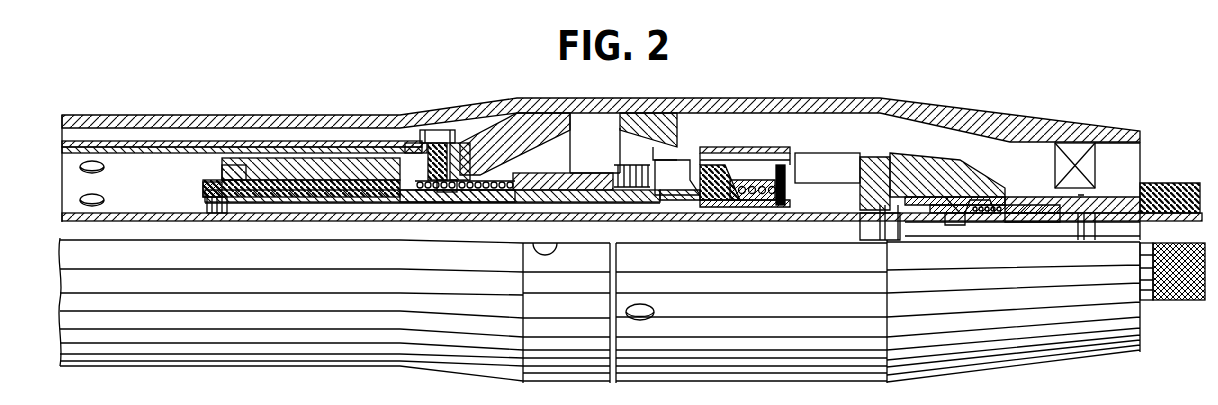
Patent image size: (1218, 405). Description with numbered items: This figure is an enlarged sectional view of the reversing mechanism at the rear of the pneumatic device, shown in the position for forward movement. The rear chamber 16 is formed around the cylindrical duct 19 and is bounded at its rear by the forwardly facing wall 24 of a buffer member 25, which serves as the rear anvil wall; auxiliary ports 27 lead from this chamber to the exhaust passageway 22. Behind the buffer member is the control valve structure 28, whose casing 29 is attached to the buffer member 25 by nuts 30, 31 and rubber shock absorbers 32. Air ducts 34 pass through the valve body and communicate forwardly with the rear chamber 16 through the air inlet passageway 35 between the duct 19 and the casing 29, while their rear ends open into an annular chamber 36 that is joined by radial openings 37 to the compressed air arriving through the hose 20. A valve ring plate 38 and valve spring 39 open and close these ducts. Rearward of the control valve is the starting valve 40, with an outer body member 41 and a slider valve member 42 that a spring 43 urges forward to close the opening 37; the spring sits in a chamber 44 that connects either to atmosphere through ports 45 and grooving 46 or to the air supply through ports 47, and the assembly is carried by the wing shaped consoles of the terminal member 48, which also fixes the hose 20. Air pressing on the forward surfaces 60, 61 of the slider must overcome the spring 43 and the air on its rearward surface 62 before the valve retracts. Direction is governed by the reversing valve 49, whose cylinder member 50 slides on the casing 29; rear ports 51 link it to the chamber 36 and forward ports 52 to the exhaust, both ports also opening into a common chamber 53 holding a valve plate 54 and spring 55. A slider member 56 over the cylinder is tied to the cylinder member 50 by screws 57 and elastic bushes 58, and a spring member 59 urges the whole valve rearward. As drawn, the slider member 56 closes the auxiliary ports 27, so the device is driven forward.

The rear chamber 16 is at (80, 188).
The cylindrical duct 19 is at (130, 223).
The hose 20 is at (1180, 196).
The exhaust passageway 22 is at (137, 135).
The forwardly facing wall 24 is at (224, 168).
The buffer member 25 is at (258, 158).
The auxiliary ports 27 is at (100, 170).
The control valve structure 28 is at (683, 192).
The casing 29 is at (485, 202).
The nut 30 is at (403, 200).
The nut 31 is at (207, 195).
The rubber shock absorbers 32 is at (337, 193).
The air ducts 34 is at (718, 204).
The air inlet passageway 35 is at (257, 213).
The annular chamber 36 is at (836, 177).
The radial openings 37 is at (852, 180).
The valve ring plate 38 is at (787, 206).
The valve spring 39 is at (738, 205).
The starting valve 40 is at (962, 220).
The outer body member 41 is at (913, 177).
The slider valve member 42 is at (897, 214).
The spring 43 is at (1013, 220).
The chamber 44 is at (997, 195).
The ports 45 is at (940, 183).
The grooving 46 is at (947, 197).
The ports 47 is at (1055, 216).
The terminal member 48 is at (1100, 216).
The reversing valve 49 is at (524, 175).
The cylinder member 50 is at (738, 148).
The rear ports 51 is at (717, 180).
The forward ports 52 is at (630, 168).
The common chamber 53 is at (672, 177).
The valve plate 54 is at (672, 158).
The spring 55 is at (612, 202).
The slider member 56 is at (100, 142).
The screws 57 is at (432, 130).
The elastic bushes 58 is at (463, 163).
The spring member 59 is at (447, 193).
The forward surface 60 is at (863, 218).
The forward surface 61 is at (953, 221).
The rearward surface 62 is at (980, 212).